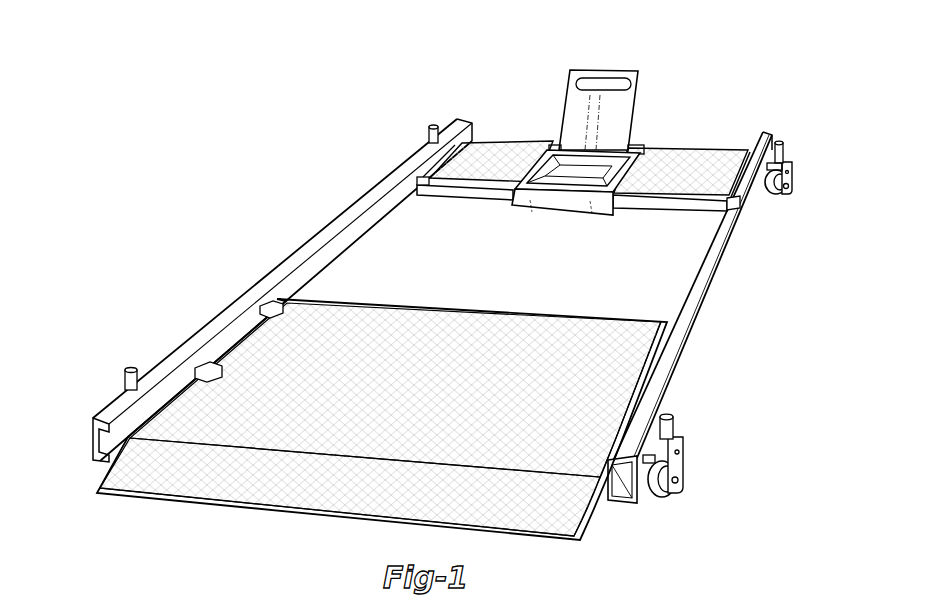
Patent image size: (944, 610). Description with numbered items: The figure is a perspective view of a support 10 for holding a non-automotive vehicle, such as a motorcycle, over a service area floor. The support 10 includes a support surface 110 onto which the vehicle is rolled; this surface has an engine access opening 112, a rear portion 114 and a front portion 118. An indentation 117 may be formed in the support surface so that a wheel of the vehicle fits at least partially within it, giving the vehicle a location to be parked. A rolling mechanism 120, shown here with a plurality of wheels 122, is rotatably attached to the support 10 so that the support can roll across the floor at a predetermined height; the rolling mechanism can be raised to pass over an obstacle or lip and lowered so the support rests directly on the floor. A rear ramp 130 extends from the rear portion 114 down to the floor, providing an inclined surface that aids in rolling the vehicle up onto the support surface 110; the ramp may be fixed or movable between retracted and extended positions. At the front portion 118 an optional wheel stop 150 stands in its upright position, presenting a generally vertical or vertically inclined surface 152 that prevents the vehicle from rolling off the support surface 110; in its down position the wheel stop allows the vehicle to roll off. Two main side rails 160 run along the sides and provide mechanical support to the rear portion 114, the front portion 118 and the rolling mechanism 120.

The support 10 is at (450, 283).
The support surface 110 is at (382, 413).
The engine access opening 112 is at (432, 265).
The rear portion 114 is at (413, 438).
The indentation 117 is at (603, 166).
The front portion 118 is at (488, 150).
The rolling mechanism 120 is at (725, 287).
The wheels 122 is at (774, 198).
The rear ramp 130 is at (400, 503).
The wheel stop 150 is at (570, 90).
The vertical surface 152 is at (575, 106).
The main side rails 160 is at (302, 247).